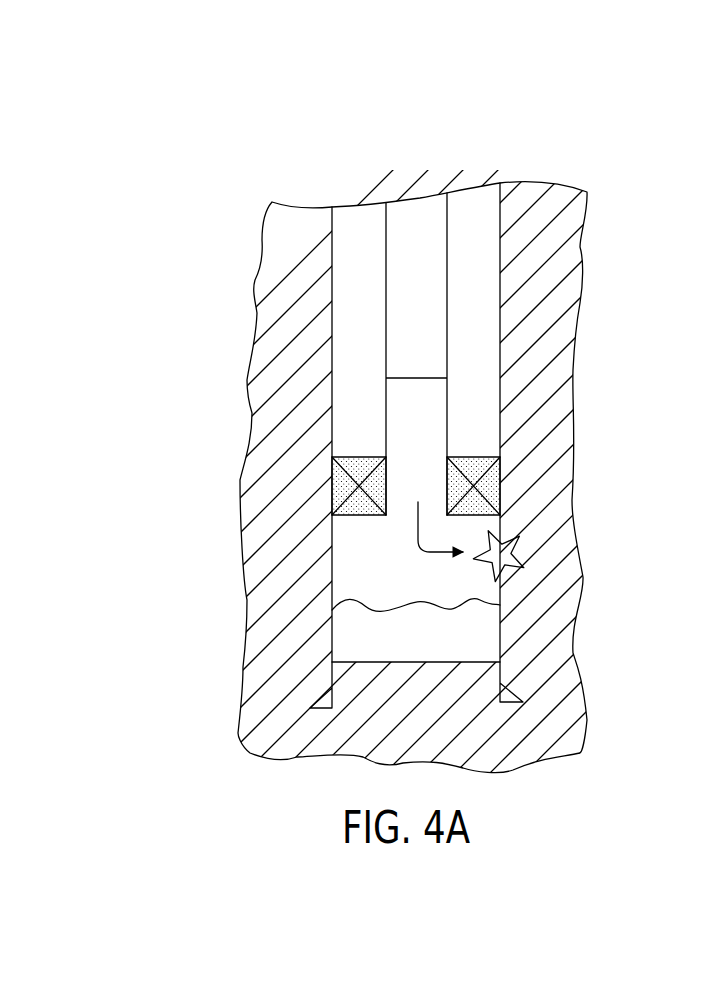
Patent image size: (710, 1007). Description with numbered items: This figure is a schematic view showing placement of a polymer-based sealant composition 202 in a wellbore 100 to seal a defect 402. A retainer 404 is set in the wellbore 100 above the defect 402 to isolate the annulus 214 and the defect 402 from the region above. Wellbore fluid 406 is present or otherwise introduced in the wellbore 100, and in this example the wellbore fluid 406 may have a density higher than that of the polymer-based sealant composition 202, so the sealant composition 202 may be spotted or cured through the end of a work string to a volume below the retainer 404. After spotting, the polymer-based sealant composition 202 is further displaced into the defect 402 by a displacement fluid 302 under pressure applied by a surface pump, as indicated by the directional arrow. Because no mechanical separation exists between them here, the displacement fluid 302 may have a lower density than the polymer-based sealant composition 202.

The wellbore 100 is at (218, 133).
The annulus 214 is at (265, 307).
The wellbore fluid 406 is at (353, 405).
The displacement fluid 302 is at (427, 325).
The retainer 404 is at (487, 470).
The defect 402 is at (521, 542).
The polymer-based sealant composition 202 is at (425, 575).